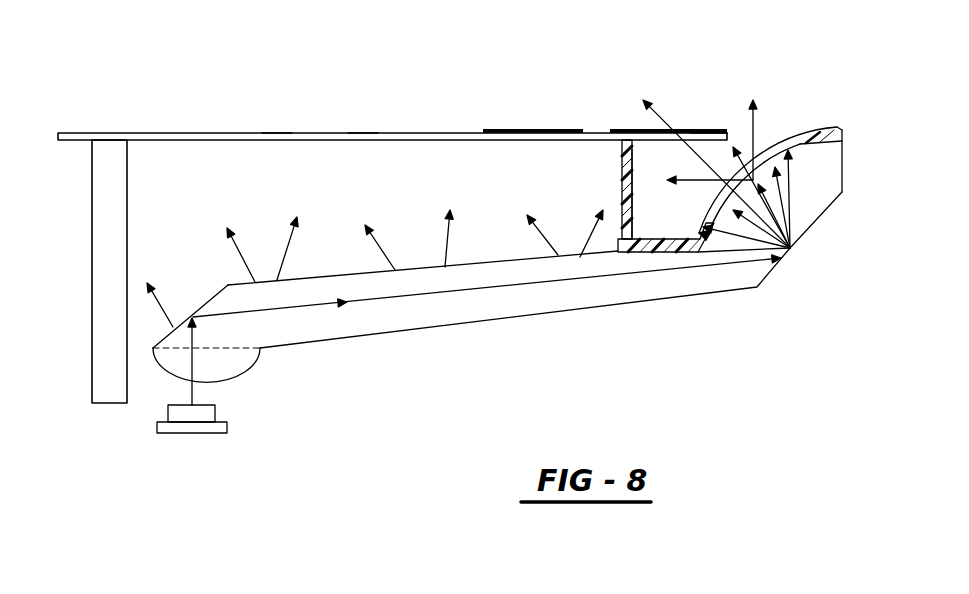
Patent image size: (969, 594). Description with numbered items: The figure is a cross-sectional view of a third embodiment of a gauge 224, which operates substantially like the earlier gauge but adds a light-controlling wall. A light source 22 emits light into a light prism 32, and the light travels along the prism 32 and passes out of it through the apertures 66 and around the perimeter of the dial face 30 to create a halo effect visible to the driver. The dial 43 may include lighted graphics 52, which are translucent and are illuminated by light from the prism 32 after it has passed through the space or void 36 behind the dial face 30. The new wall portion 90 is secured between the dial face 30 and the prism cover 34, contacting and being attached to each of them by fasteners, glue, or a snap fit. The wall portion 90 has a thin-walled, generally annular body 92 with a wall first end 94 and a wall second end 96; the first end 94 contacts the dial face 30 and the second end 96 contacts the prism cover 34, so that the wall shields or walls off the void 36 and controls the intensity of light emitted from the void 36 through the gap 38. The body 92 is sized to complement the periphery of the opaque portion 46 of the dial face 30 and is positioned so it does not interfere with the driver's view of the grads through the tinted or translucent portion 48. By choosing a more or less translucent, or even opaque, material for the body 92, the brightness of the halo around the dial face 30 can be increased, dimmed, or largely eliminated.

The gauge 224 is at (142, 68).
The dial face 30 is at (231, 133).
The dial 43 is at (277, 133).
The opaque portion 46 is at (364, 133).
The void 36 is at (370, 179).
The lighted graphics 52 is at (520, 130).
The wall first end 94 is at (583, 130).
The translucent portion 48 is at (698, 131).
The wall portion 90 is at (622, 190).
The annular body 92 is at (633, 178).
The wall second end 96 is at (660, 246).
The gap 38 is at (772, 114).
The apertures 66 is at (797, 148).
The prism cover 34 is at (833, 126).
The light prism 32 is at (482, 321).
The light source 22 is at (205, 435).